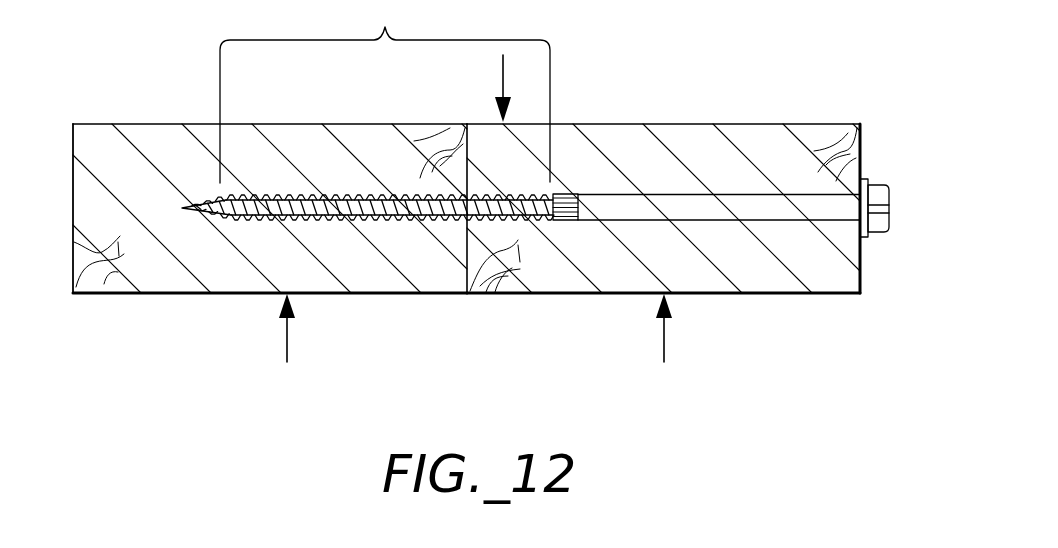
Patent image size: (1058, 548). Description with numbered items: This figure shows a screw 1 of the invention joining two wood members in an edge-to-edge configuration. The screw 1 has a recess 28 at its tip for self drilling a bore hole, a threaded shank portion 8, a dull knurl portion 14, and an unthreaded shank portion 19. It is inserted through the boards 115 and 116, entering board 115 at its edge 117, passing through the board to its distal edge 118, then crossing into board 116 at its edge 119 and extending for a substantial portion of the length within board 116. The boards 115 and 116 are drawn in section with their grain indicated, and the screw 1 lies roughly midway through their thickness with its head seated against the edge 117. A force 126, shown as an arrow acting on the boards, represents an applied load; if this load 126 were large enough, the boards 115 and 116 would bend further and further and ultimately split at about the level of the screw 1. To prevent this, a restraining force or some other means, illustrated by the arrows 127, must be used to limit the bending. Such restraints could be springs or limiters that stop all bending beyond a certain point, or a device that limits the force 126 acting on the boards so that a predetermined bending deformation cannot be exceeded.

The screw 1 is at (558, 200).
The threaded shank portion 8 is at (385, 91).
The dull knurl portion 14 is at (566, 192).
The unthreaded shank portion 19 is at (745, 193).
The recess 28 is at (205, 216).
The board 115 is at (708, 124).
The board 116 is at (132, 124).
The edge 117 is at (862, 148).
The distal edge 118 is at (445, 145).
The edge 119 is at (500, 252).
The force 126 is at (503, 80).
The arrows 127 is at (288, 330).